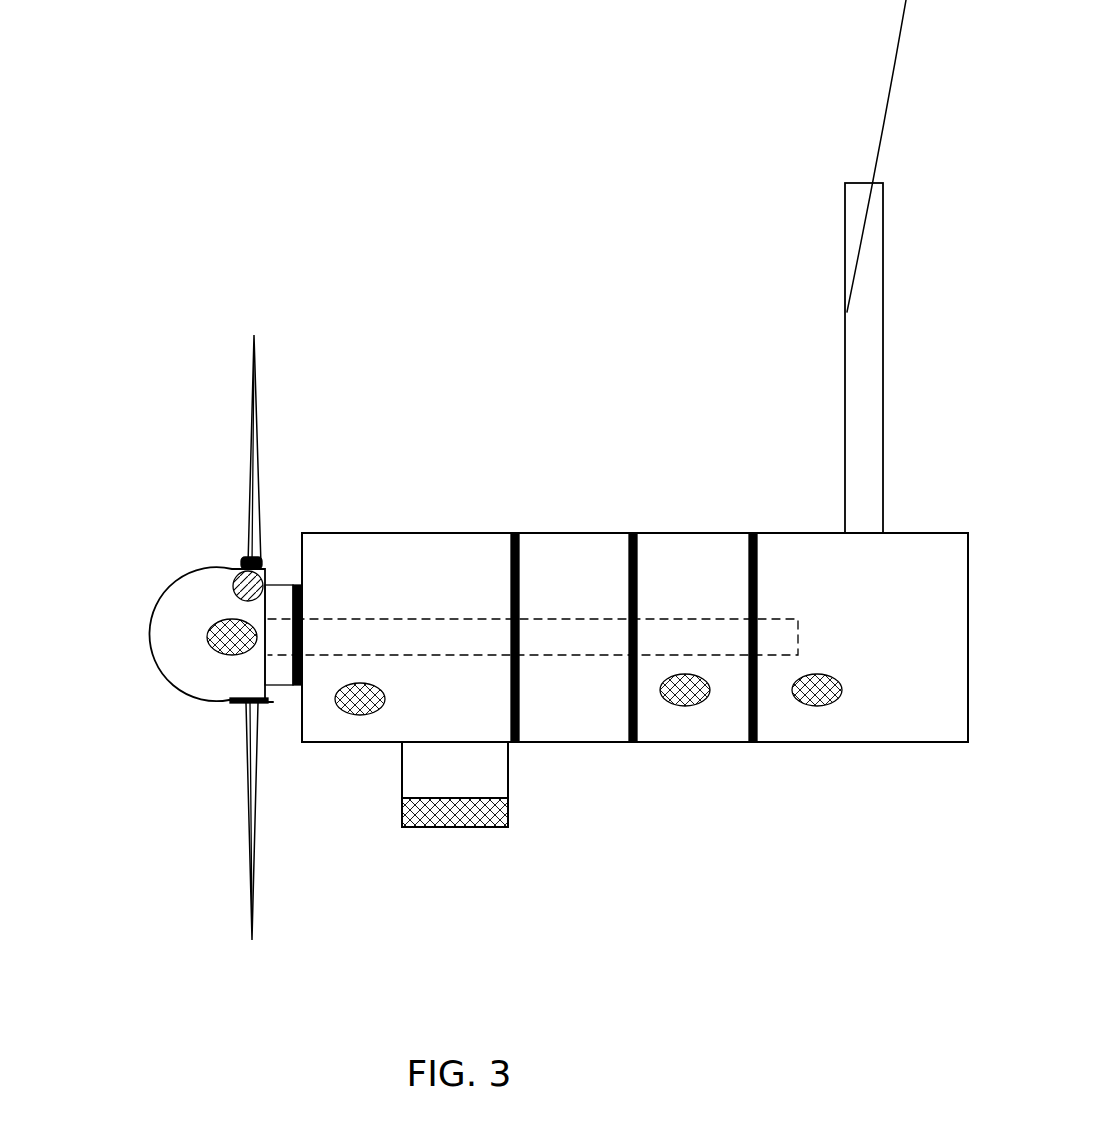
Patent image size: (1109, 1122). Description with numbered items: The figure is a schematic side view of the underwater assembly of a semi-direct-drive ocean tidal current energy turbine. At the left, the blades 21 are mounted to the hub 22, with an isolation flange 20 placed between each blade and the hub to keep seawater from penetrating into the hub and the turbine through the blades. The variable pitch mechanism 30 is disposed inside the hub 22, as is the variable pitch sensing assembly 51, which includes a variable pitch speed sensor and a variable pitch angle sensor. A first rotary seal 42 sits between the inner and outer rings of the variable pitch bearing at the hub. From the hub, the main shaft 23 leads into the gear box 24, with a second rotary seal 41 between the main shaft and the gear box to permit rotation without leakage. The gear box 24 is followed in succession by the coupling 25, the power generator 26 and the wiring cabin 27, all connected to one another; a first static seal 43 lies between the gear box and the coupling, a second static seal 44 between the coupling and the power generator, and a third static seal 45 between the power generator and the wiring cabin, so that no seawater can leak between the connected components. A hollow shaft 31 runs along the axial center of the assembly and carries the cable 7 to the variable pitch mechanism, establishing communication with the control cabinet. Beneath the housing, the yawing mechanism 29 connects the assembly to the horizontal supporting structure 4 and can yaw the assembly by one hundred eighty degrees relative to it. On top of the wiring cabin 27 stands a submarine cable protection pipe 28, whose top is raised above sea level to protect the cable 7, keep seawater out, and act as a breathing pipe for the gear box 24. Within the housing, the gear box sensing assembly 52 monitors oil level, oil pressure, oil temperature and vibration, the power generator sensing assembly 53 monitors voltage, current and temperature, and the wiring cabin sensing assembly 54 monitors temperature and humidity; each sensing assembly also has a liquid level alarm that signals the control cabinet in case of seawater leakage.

The horizontal supporting structure 4 is at (464, 828).
The cable 7 is at (893, 156).
The isolation flange 20 is at (251, 562).
The blades 21 is at (249, 903).
The hub 22 is at (180, 648).
The main shaft 23 is at (287, 655).
The gear box 24 is at (336, 567).
The coupling 25 is at (567, 567).
The power generator 26 is at (656, 575).
The wiring cabin 27 is at (873, 705).
The submarine cable protection pipes 28 is at (883, 388).
The yawing mechanism 29 is at (493, 762).
The variable pitch mechanism 30 is at (232, 572).
The hollow shaft 31 is at (775, 637).
The second rotary seal 41 is at (302, 583).
The first rotary seal 42 is at (240, 705).
The first static seal 43 is at (521, 590).
The second static seal 44 is at (640, 590).
The third static seal 45 is at (757, 610).
The variable pitch sensing assembly 51 is at (230, 636).
The gear box sensing assembly 52 is at (358, 700).
The power generator sensing assembly 53 is at (685, 700).
The wiring cabin sensing assembly 54 is at (815, 705).